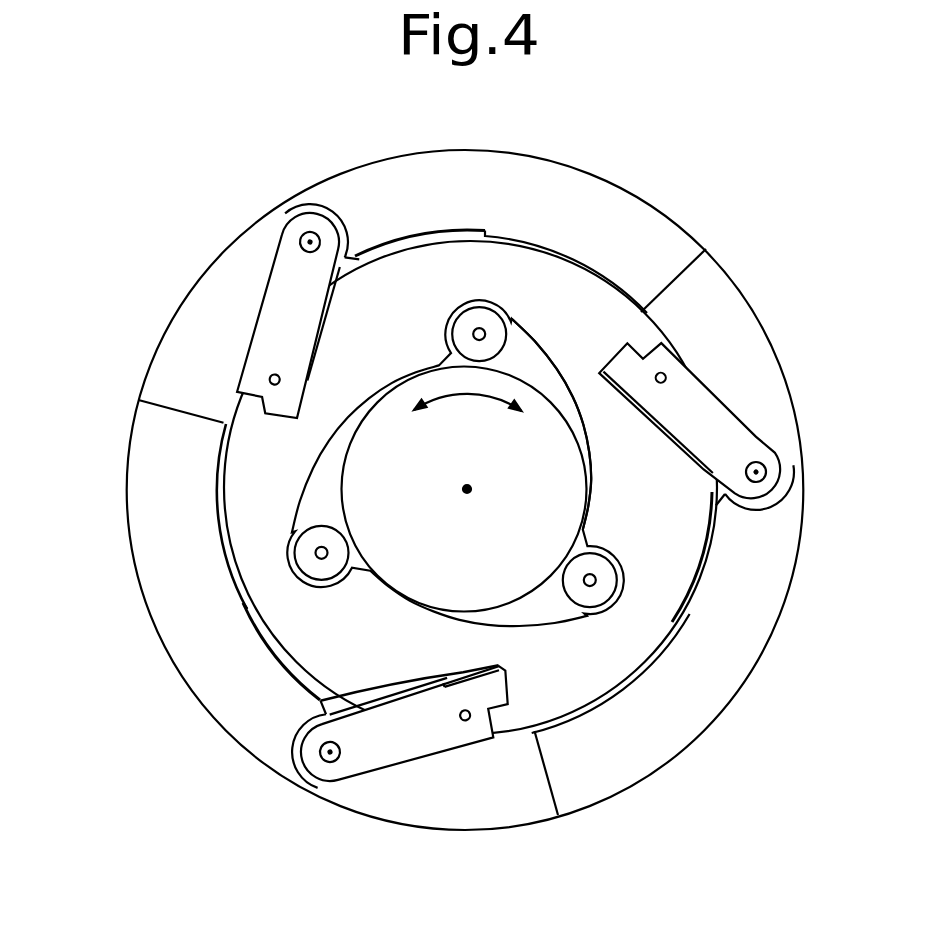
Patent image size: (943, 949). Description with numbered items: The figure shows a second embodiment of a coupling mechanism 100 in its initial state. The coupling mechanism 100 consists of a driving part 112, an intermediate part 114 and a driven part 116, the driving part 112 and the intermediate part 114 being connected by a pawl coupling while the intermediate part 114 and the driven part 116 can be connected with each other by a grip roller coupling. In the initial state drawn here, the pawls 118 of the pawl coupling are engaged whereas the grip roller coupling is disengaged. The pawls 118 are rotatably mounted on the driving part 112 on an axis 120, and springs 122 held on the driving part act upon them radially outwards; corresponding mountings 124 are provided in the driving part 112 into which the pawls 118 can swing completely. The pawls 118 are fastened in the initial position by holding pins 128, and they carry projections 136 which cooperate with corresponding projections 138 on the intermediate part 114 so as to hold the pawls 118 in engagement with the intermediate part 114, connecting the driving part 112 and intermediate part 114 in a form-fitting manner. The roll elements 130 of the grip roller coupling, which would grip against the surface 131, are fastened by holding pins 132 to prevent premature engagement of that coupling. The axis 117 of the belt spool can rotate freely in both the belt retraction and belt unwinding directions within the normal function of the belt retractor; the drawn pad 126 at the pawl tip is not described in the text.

The coupling mechanism 100 is at (143, 627).
The driving part 112 is at (153, 425).
The intermediate part 114 is at (237, 513).
The driven part 116 is at (560, 510).
The axis of the belt spool 117 is at (467, 490).
The pawls 118 is at (363, 752).
The axis 120 is at (309, 240).
The springs 122 is at (710, 470).
The mountings 124 is at (532, 778).
The lever pad 126 is at (500, 670).
The holding pins 128 is at (465, 720).
The roll elements 130 is at (498, 325).
The cam surface 131 is at (530, 350).
The holding pins 132 is at (479, 333).
The projections 136 is at (630, 370).
The projections 138 is at (650, 335).